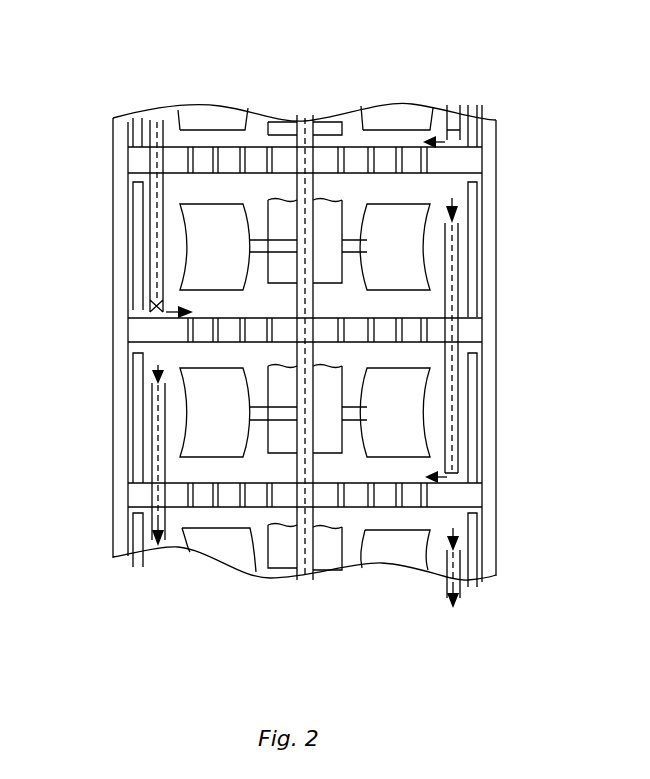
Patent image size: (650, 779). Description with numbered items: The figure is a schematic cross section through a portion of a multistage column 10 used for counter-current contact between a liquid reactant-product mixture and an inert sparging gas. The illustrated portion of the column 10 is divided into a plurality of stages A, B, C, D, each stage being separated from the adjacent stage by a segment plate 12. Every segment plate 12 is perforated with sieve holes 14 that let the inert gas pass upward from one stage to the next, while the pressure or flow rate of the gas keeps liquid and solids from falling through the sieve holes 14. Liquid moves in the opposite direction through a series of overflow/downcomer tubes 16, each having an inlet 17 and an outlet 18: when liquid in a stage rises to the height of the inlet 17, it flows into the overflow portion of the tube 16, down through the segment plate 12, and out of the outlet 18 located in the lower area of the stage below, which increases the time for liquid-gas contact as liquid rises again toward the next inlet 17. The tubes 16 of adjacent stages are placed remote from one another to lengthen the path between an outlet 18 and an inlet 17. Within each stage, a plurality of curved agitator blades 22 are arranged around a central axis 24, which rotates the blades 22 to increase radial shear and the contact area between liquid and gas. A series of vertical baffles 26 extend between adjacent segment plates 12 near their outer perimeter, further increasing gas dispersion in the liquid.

The column 10 is at (497, 188).
The segment plate 12 is at (470, 163).
The sieve holes 14 is at (396, 150).
The overflow/downcomer tube 16 is at (165, 197).
The inlet 17 is at (152, 388).
The outlet 18 is at (484, 125).
The agitator blades 22 is at (230, 264).
The central axis 24 is at (305, 118).
The vertical baffles 26 is at (140, 127).
The stage A is at (177, 141).
The stage B is at (180, 248).
The stage C is at (182, 415).
The stage D is at (177, 548).